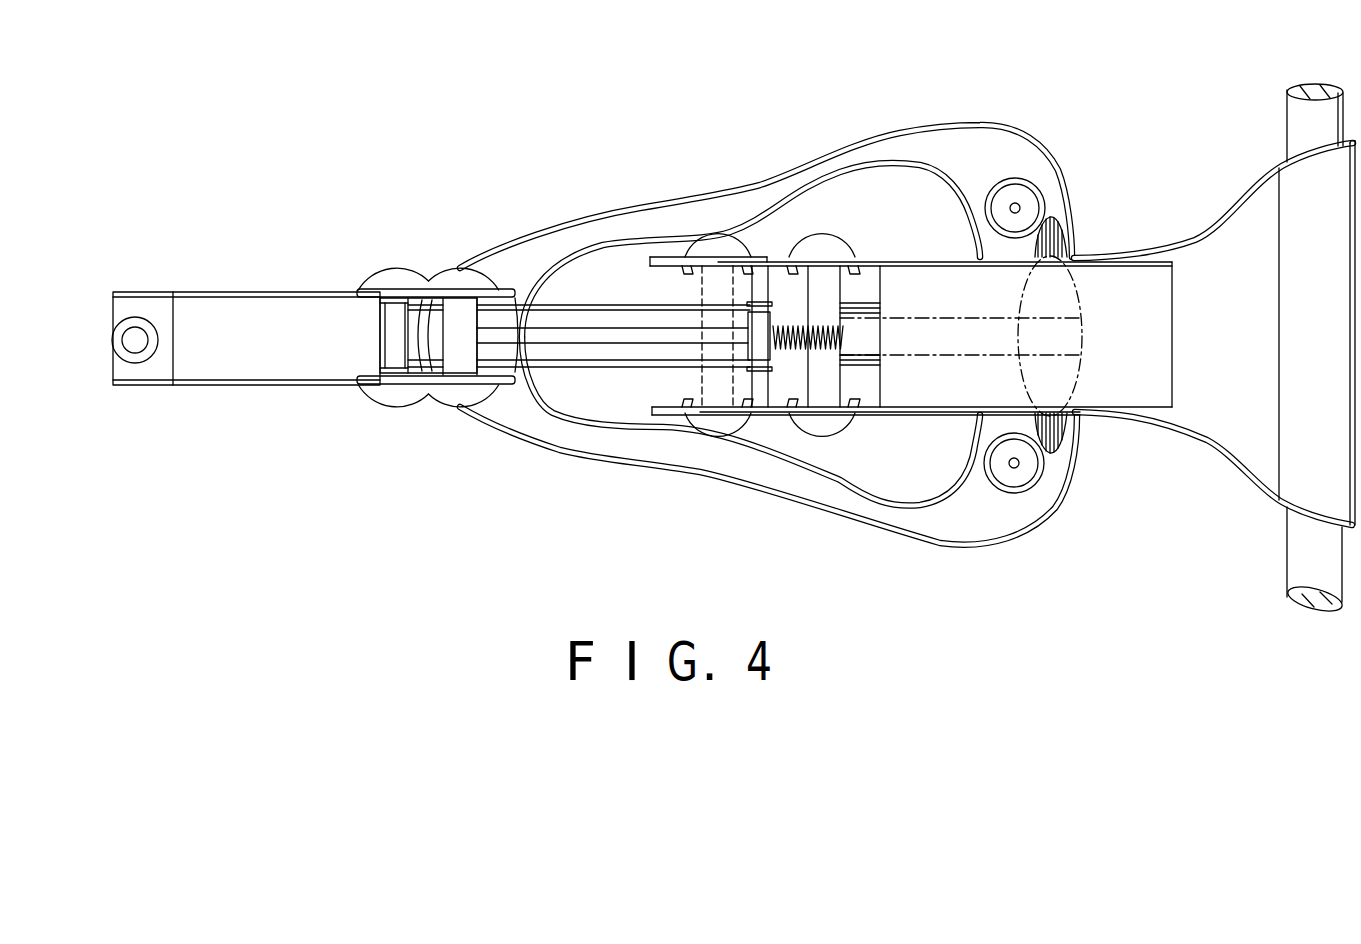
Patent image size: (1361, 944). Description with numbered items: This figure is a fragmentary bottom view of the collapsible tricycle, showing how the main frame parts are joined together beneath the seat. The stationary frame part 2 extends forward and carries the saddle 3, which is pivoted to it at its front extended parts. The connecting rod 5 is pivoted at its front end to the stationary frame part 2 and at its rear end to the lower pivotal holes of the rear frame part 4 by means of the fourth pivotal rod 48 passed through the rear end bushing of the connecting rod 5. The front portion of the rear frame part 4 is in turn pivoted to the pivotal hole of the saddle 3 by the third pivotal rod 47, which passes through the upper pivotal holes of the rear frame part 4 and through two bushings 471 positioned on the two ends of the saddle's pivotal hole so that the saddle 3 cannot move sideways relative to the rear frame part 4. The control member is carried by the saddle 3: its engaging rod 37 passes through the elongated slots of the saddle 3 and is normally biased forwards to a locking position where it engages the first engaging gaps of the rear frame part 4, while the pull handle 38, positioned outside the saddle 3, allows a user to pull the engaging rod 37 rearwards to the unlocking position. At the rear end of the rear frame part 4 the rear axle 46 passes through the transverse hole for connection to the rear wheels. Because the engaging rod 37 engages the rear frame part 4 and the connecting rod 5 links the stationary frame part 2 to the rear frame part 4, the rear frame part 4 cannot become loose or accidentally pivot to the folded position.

The stationary frame part 2 is at (265, 386).
The saddle 3 is at (755, 188).
The rear frame part 4 is at (1237, 217).
The connecting rod 5 is at (590, 347).
The engaging rod 37 is at (765, 393).
The pull handle 38 is at (1053, 237).
The rear axle 46 is at (1302, 118).
The third pivotal rod 47 is at (712, 387).
The bushings 471 is at (698, 387).
The fourth pivotal rod 48 is at (823, 392).